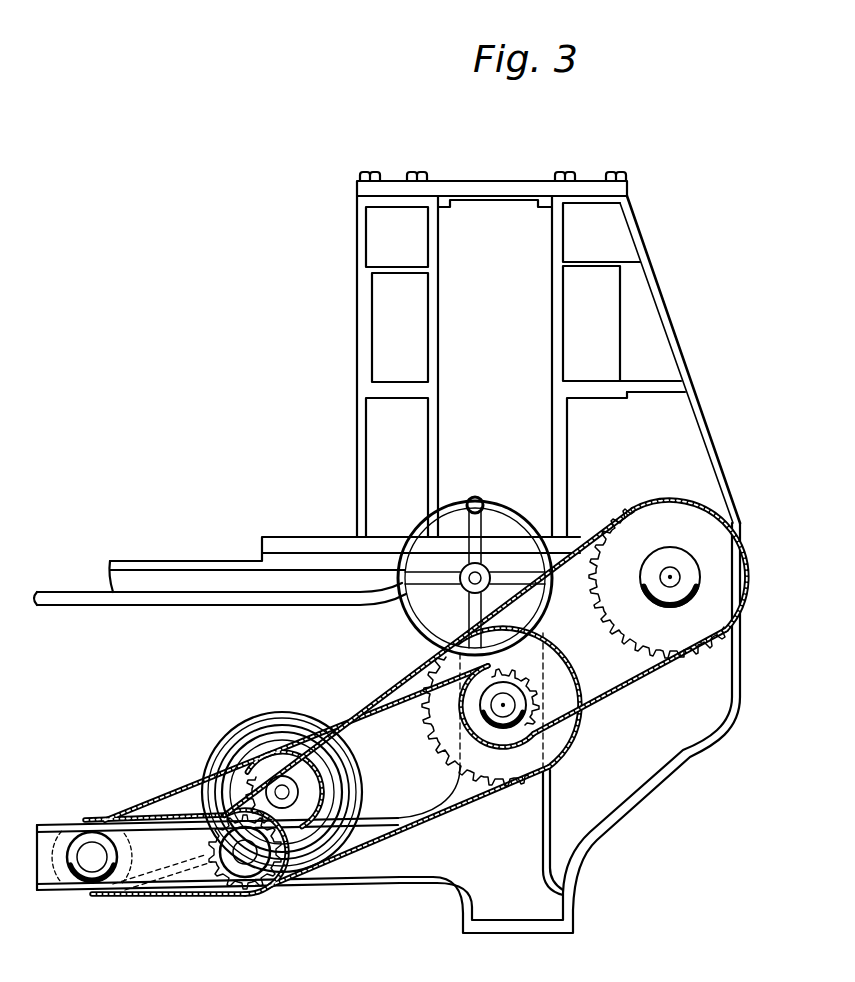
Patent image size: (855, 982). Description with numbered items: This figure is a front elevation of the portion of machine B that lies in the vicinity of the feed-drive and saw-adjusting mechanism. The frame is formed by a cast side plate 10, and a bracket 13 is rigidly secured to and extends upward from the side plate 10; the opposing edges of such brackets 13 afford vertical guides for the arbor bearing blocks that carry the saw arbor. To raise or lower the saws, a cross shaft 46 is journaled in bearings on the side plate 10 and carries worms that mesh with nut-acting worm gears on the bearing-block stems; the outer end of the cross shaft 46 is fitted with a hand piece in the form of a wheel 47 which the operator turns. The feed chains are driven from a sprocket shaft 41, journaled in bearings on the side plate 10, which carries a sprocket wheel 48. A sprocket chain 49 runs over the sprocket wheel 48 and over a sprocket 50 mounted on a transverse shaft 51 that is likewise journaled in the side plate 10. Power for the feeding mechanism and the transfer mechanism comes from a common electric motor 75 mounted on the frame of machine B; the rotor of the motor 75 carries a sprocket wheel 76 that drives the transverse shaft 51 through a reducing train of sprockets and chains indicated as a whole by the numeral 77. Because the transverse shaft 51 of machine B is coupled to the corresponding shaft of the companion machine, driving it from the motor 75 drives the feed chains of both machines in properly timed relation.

The side plate 10 is at (388, 728).
The bracket 13 is at (385, 450).
The machine B is at (660, 264).
The sprocket shaft 41 is at (680, 585).
The cross shaft 46 is at (489, 570).
The hand wheel 47 is at (497, 513).
The sprocket wheel 48 is at (657, 582).
The sprocket chain 49 is at (693, 657).
The sprocket 50 is at (626, 683).
The transverse shaft 51 is at (540, 707).
The electric motor 75 is at (278, 713).
The sprocket wheel 76 is at (247, 768).
The reducing train of sprockets and chains 77 is at (120, 812).